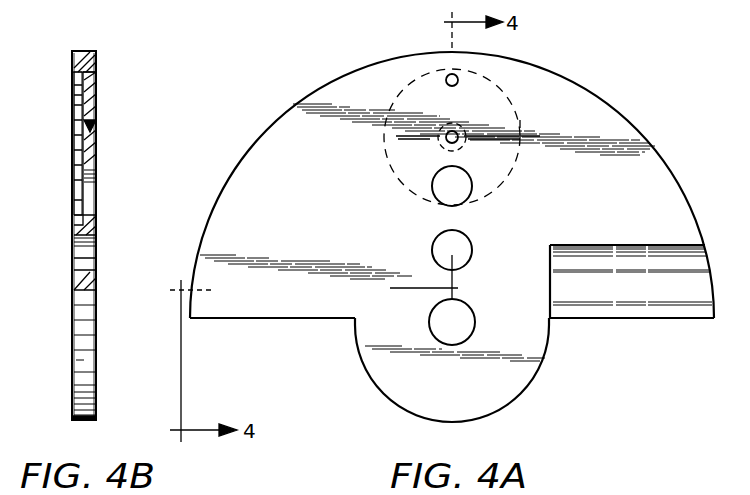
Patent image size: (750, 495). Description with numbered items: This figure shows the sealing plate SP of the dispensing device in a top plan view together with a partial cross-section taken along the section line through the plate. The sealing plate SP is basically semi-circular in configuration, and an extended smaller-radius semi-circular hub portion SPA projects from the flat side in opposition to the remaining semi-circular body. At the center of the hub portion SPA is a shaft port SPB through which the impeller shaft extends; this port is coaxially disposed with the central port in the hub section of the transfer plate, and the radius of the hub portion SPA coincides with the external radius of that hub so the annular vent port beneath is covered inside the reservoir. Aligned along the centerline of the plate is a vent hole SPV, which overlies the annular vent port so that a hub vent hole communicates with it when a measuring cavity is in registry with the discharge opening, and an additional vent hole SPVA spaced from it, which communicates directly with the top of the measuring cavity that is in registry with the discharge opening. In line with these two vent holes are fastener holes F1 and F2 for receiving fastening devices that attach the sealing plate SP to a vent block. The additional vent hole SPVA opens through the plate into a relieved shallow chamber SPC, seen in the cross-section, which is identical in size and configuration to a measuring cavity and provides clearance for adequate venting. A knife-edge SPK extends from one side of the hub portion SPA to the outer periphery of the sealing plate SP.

In FIG. 4A, the sealing plate SP is at (300, 252).
In FIG. 4B, the sealing plate SP is at (140, 186).
In FIG. 4A, the hub portion SPA is at (500, 393).
In FIG. 4A, the knife-edge SPK is at (593, 318).
In FIG. 4A, the fastener hole F1 is at (458, 134).
In FIG. 4A, the fastener hole F2 is at (458, 79).
In FIG. 4A, the additional vent hole SPVA is at (472, 184).
In FIG. 4A, the vent hole SPV is at (470, 244).
In FIG. 4A, the shaft port SPB is at (474, 313).
In FIG. 4B, the relieved shallow chamber SPC is at (74, 88).